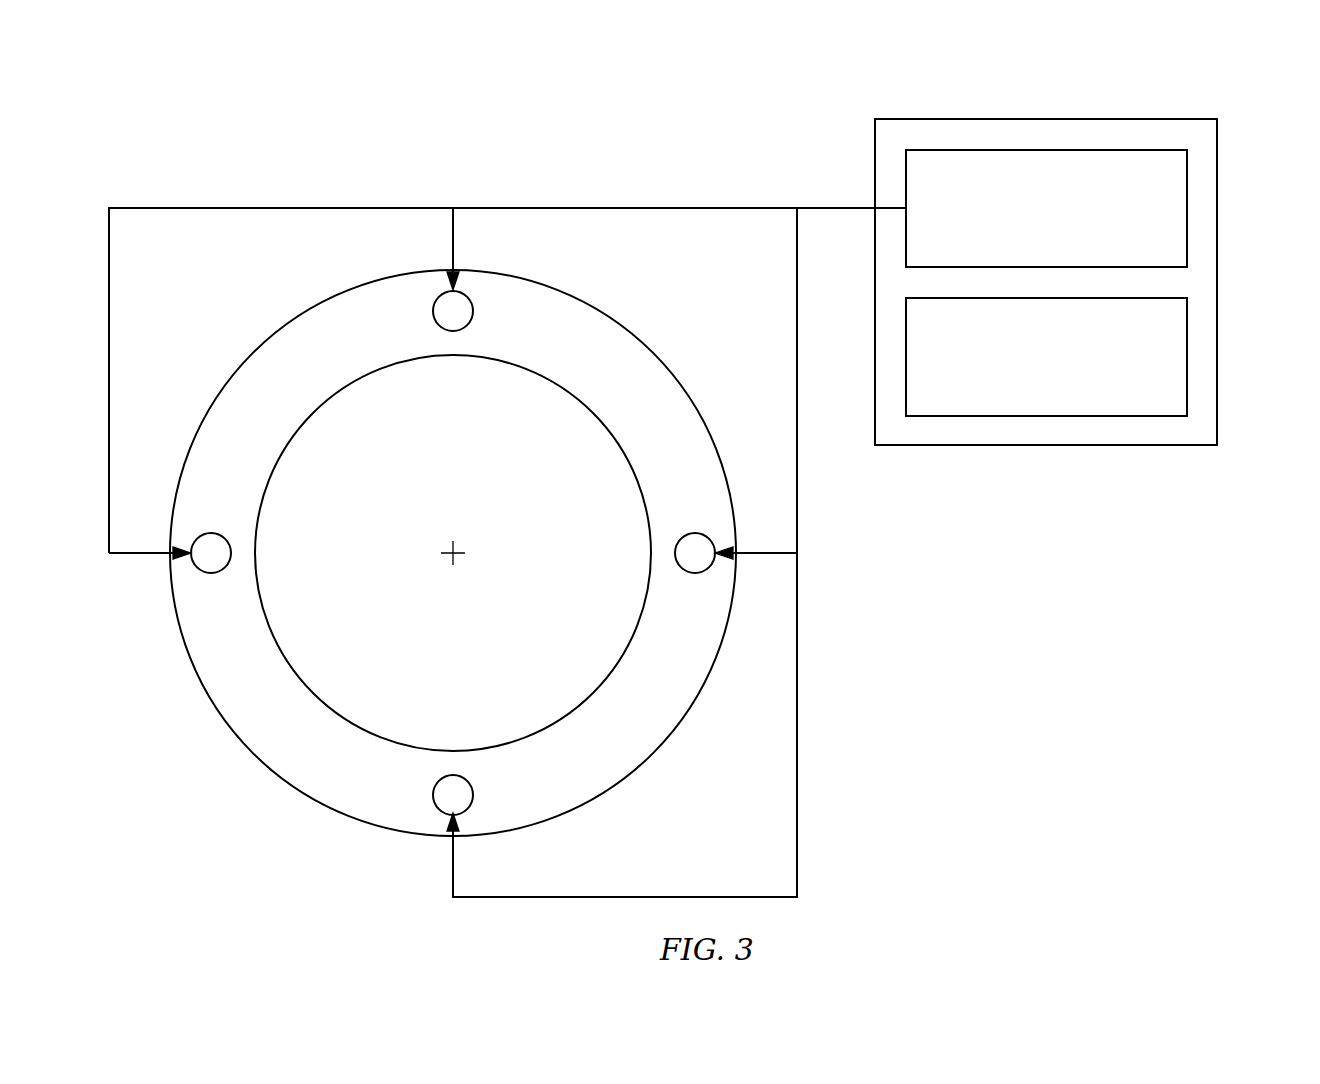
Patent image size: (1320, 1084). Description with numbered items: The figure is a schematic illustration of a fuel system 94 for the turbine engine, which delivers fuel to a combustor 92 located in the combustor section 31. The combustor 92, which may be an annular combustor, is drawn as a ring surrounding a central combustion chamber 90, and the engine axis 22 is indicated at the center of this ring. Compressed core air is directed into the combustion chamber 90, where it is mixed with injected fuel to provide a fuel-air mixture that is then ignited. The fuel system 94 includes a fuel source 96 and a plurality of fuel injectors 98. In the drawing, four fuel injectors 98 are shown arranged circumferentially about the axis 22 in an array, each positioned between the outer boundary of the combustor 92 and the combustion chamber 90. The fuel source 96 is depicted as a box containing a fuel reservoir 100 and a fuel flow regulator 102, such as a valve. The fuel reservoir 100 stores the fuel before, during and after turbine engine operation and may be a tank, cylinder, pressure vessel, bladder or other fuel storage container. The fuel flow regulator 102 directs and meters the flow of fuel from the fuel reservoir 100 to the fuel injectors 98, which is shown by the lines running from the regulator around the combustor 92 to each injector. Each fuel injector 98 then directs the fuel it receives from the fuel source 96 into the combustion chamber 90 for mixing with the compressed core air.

The combustor section 31 is at (590, 266).
The combustor 92 is at (643, 331).
The combustion chamber 90 is at (625, 378).
The axis 22 is at (456, 558).
The fuel injectors 98 is at (453, 331).
The fuel system 94 is at (1183, 101).
The fuel source 96 is at (1217, 283).
The fuel flow regulator 102 is at (1187, 202).
The fuel reservoir 100 is at (1187, 366).